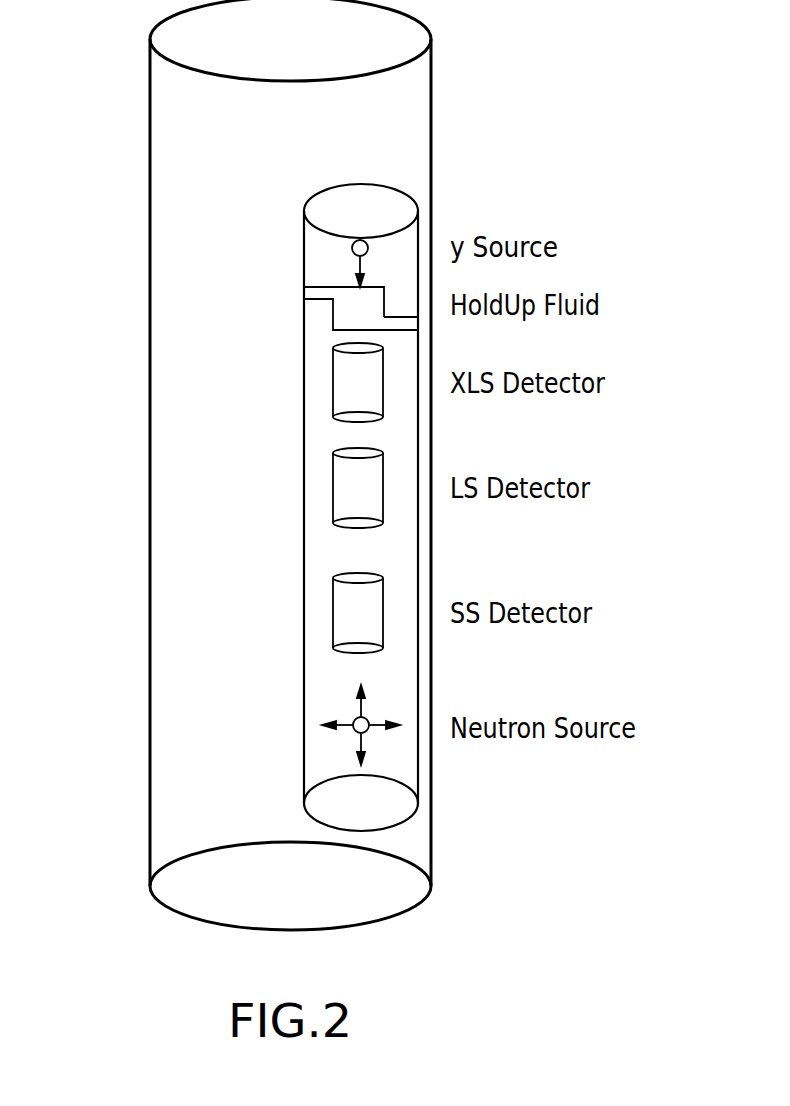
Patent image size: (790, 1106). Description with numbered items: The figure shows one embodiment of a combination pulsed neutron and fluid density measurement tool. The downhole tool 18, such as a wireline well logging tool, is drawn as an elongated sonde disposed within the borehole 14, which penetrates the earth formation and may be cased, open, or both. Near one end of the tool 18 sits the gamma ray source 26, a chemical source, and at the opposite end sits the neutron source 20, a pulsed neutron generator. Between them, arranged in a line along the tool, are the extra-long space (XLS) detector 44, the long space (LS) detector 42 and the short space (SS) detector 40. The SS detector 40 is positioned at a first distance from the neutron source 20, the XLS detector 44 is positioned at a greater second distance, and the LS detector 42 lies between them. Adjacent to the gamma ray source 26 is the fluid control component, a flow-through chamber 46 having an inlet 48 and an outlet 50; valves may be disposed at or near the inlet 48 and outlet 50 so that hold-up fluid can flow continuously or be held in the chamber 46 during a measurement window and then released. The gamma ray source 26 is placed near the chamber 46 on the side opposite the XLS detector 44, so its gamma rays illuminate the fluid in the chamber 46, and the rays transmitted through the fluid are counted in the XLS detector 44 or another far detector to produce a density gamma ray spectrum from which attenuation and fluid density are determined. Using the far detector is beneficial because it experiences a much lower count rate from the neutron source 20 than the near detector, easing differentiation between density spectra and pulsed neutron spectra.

The borehole 14 is at (173, 115).
The downhole tool 18 is at (328, 208).
The gamma ray source 26 is at (369, 250).
The inlet 48 is at (304, 292).
The flow-through chamber 46 is at (345, 321).
The outlet 50 is at (413, 320).
The extra-long space (XLS) detector 44 is at (347, 387).
The long space (LS) detector 42 is at (347, 492).
The short space (SS) detector 40 is at (347, 619).
The neutron source 20 is at (356, 718).